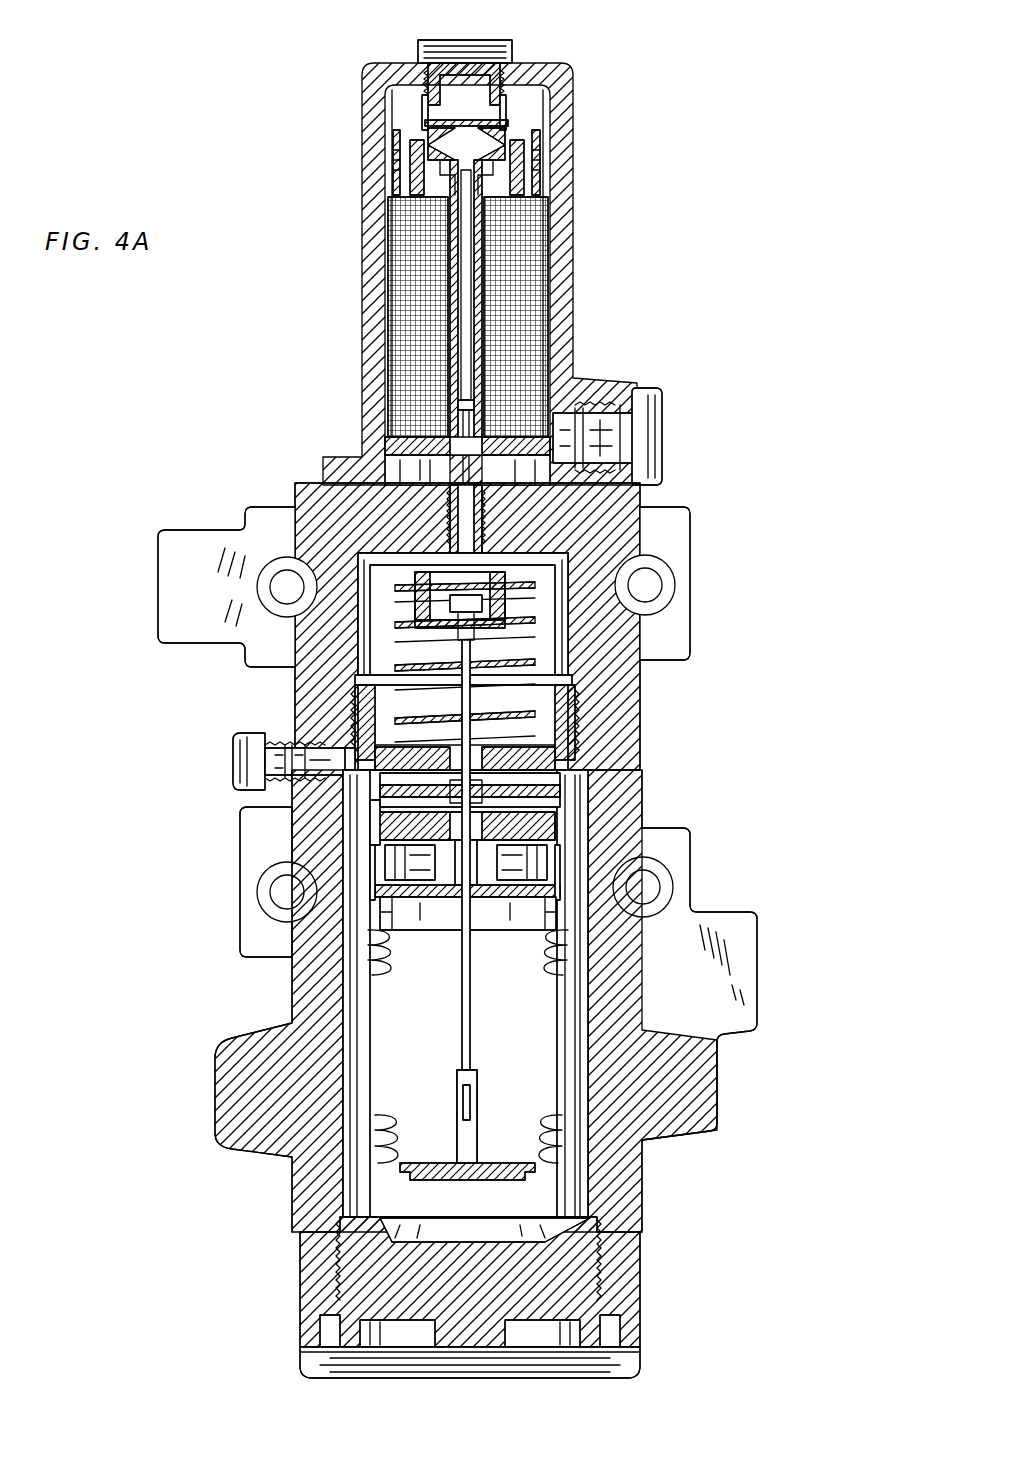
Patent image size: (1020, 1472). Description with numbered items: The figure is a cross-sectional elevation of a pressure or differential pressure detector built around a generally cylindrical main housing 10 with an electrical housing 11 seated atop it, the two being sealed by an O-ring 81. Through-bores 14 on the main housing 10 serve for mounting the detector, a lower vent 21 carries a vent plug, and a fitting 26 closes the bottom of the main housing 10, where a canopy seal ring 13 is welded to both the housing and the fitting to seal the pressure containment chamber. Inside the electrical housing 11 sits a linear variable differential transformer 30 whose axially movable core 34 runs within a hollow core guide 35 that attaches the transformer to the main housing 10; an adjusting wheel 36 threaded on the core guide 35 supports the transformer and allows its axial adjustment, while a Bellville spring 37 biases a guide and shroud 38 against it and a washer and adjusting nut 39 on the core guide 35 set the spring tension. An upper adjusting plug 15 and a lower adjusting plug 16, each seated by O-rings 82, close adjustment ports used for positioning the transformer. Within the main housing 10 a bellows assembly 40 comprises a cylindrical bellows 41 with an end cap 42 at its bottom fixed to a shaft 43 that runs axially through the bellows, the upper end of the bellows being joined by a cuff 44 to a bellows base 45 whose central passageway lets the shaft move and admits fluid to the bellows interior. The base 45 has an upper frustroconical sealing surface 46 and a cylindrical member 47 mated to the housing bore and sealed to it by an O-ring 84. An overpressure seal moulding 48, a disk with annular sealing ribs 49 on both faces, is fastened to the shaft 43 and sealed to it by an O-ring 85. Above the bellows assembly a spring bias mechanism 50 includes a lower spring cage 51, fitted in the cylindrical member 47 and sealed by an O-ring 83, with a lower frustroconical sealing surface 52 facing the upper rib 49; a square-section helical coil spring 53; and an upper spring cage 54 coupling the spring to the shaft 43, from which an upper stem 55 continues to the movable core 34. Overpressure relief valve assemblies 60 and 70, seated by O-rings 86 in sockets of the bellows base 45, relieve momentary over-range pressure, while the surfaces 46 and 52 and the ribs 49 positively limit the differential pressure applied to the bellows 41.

The main housing 10 is at (705, 1106).
The electrical housing 11 is at (362, 348).
The canopy seal ring 13 is at (605, 1368).
The through-bores 14 is at (676, 583).
The upper adjusting plug 15 is at (430, 46).
The lower adjusting plug 16 is at (662, 404).
The lower vent 21 is at (235, 760).
The fitting 26 is at (575, 1279).
The linear variable differential transformer 30 is at (535, 265).
The movable core 34 is at (462, 258).
The core guide 35 is at (455, 282).
The adjusting wheel 36 is at (395, 448).
The Bellville spring 37 is at (450, 140).
The guide and shroud 38 is at (430, 152).
The washer and adjusting nut 39 is at (530, 112).
The bellows assembly 40 is at (795, 887).
The bellows 41 is at (375, 960).
The end cap 42 is at (466, 1180).
The shaft 43 is at (462, 1033).
The cuff 44 is at (375, 925).
The bellows base 45 is at (380, 855).
The upper frustroconical sealing surface 46 is at (400, 825).
The cylindrical member 47 is at (560, 835).
The overpressure seal moulding 48 is at (520, 793).
The sealing ribs 49 is at (592, 770).
The spring bias mechanism 50 is at (100, 582).
The lower spring cage 51 is at (360, 715).
The lower frustroconical sealing surface 52 is at (355, 745).
The helical coil spring 53 is at (400, 648).
The upper spring cage 54 is at (405, 578).
The upper stem 55 is at (445, 562).
The overpressure relief valve assembly 60 is at (372, 897).
The overpressure relief valve assembly 70 is at (560, 858).
The O-ring 81 is at (560, 483).
The O-rings 82 is at (520, 78).
The O-ring 83 is at (572, 695).
The O-ring 84 is at (585, 745).
The O-ring 85 is at (380, 808).
The O-rings 86 is at (565, 881).